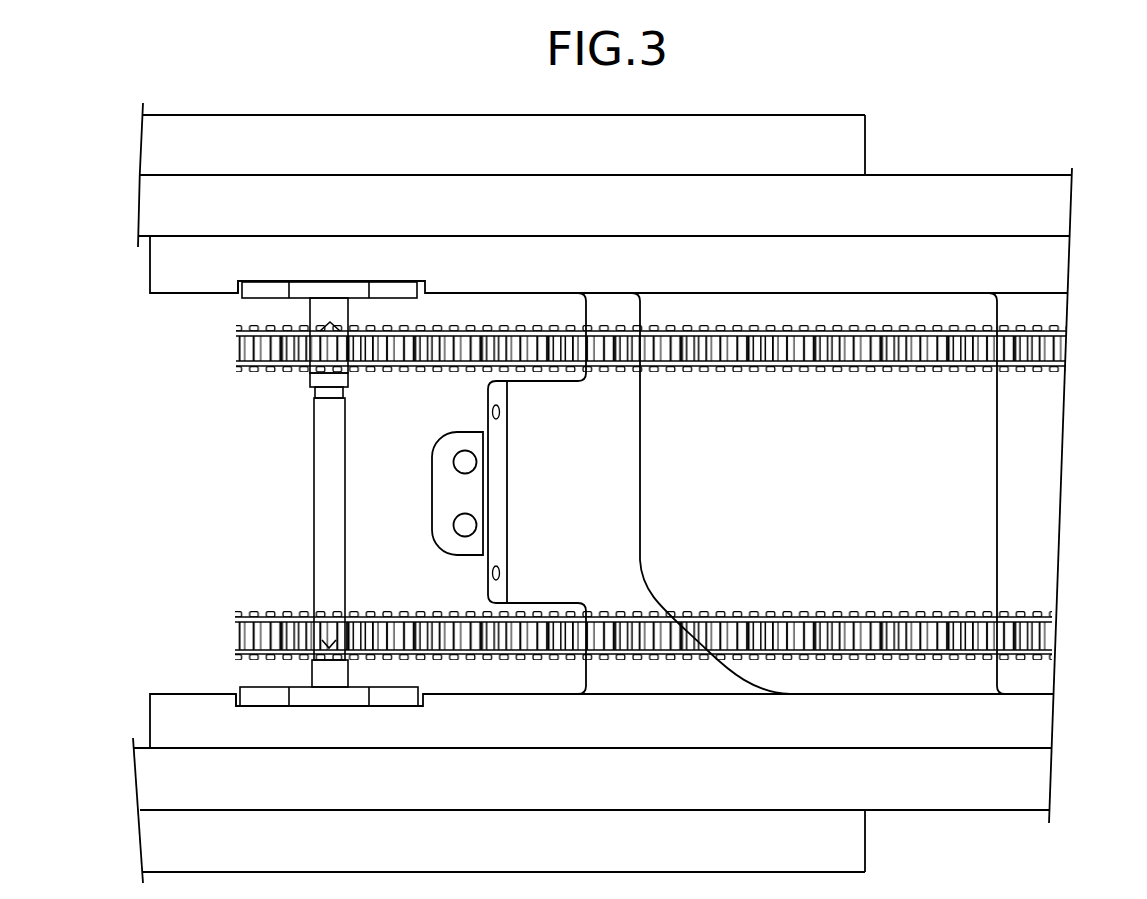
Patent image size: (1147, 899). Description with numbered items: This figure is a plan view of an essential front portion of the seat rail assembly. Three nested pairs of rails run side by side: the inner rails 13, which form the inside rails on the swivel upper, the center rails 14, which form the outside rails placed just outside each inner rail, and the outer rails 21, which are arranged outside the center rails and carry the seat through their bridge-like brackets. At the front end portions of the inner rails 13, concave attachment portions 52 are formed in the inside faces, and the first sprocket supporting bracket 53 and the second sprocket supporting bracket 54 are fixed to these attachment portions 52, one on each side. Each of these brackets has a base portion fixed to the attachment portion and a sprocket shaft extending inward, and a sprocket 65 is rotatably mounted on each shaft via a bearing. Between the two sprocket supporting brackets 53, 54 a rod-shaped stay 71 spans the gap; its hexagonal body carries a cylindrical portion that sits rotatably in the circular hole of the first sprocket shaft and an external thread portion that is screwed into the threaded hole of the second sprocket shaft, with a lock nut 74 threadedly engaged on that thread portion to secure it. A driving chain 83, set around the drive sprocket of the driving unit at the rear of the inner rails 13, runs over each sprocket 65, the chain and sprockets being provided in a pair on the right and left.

The inner rail 13 is at (1035, 265).
The center rail 14 is at (1040, 213).
The outer rail 21 is at (840, 148).
The attachment portion 52 is at (271, 280).
The first sprocket supporting bracket 53 is at (233, 683).
The second sprocket supporting bracket 54 is at (237, 299).
The sprocket 65 is at (245, 376).
The stay 71 is at (312, 489).
The lock nut 74 is at (310, 384).
The driving chain 83 is at (728, 383).